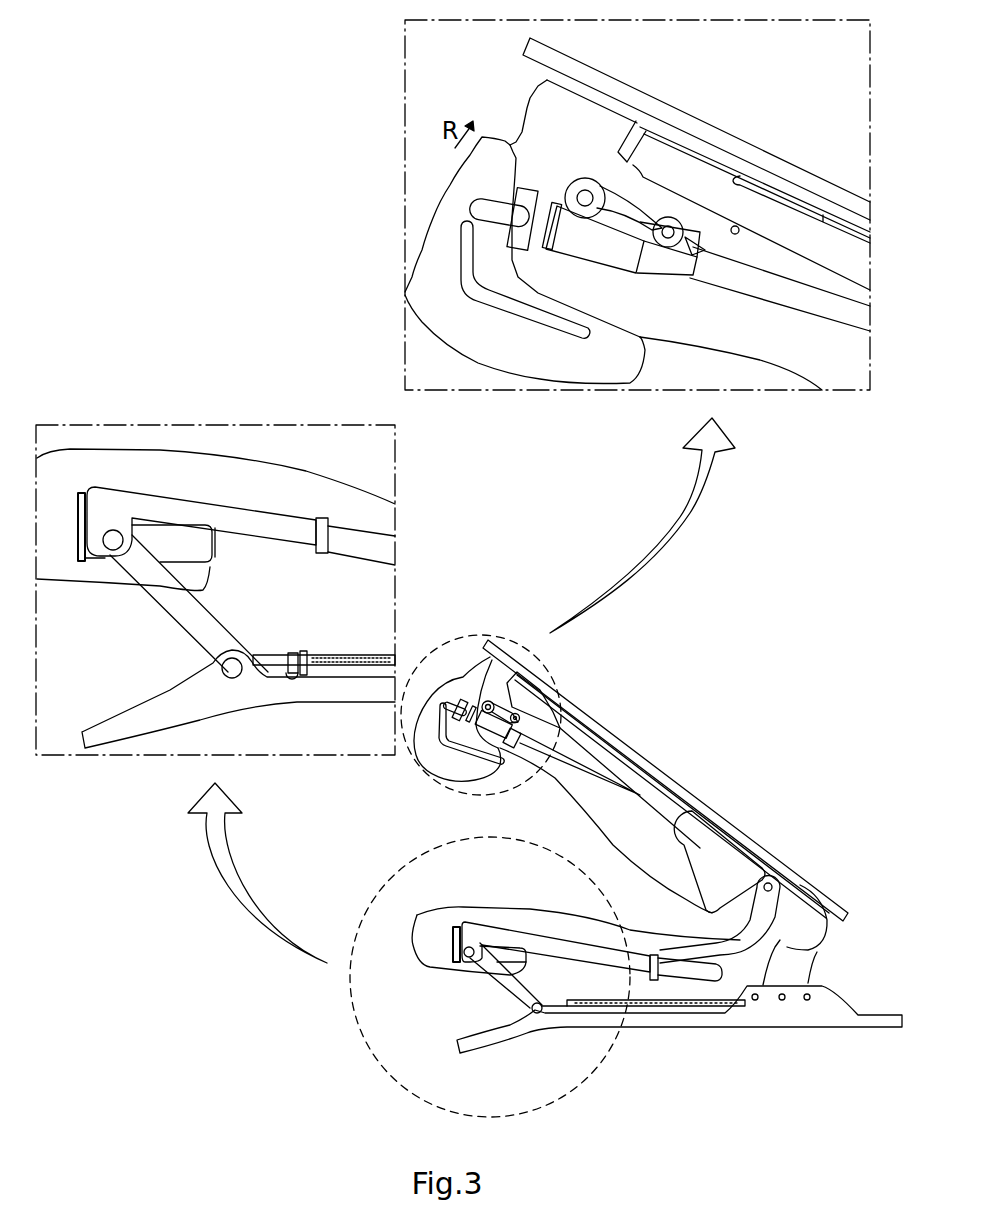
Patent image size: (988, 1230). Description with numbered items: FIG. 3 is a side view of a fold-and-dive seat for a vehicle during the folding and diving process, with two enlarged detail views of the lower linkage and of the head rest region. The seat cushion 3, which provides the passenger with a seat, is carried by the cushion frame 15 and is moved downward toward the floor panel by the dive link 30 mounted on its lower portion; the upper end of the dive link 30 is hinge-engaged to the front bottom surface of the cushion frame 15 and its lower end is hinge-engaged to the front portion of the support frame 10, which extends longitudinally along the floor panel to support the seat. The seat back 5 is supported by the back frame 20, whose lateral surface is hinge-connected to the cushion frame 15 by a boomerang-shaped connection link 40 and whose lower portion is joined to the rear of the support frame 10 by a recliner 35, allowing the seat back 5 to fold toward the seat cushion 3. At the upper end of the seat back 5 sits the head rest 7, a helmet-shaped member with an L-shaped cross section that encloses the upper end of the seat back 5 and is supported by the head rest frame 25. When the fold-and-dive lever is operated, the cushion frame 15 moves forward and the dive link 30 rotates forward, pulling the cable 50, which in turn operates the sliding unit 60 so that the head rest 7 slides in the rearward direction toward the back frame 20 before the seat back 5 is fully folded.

The seat cushion 3 is at (449, 912).
The seat back 5 is at (608, 822).
The head rest 7 is at (443, 690).
The support frame 10 is at (696, 1027).
The cushion frame 15 is at (545, 944).
The back frame 20 is at (634, 774).
The head rest frame 25 is at (426, 774).
The dive link 30 is at (506, 984).
The recliner 35 is at (827, 938).
The connection link 40 is at (768, 908).
The cable 50 is at (615, 1007).
The sliding unit 60 is at (493, 683).